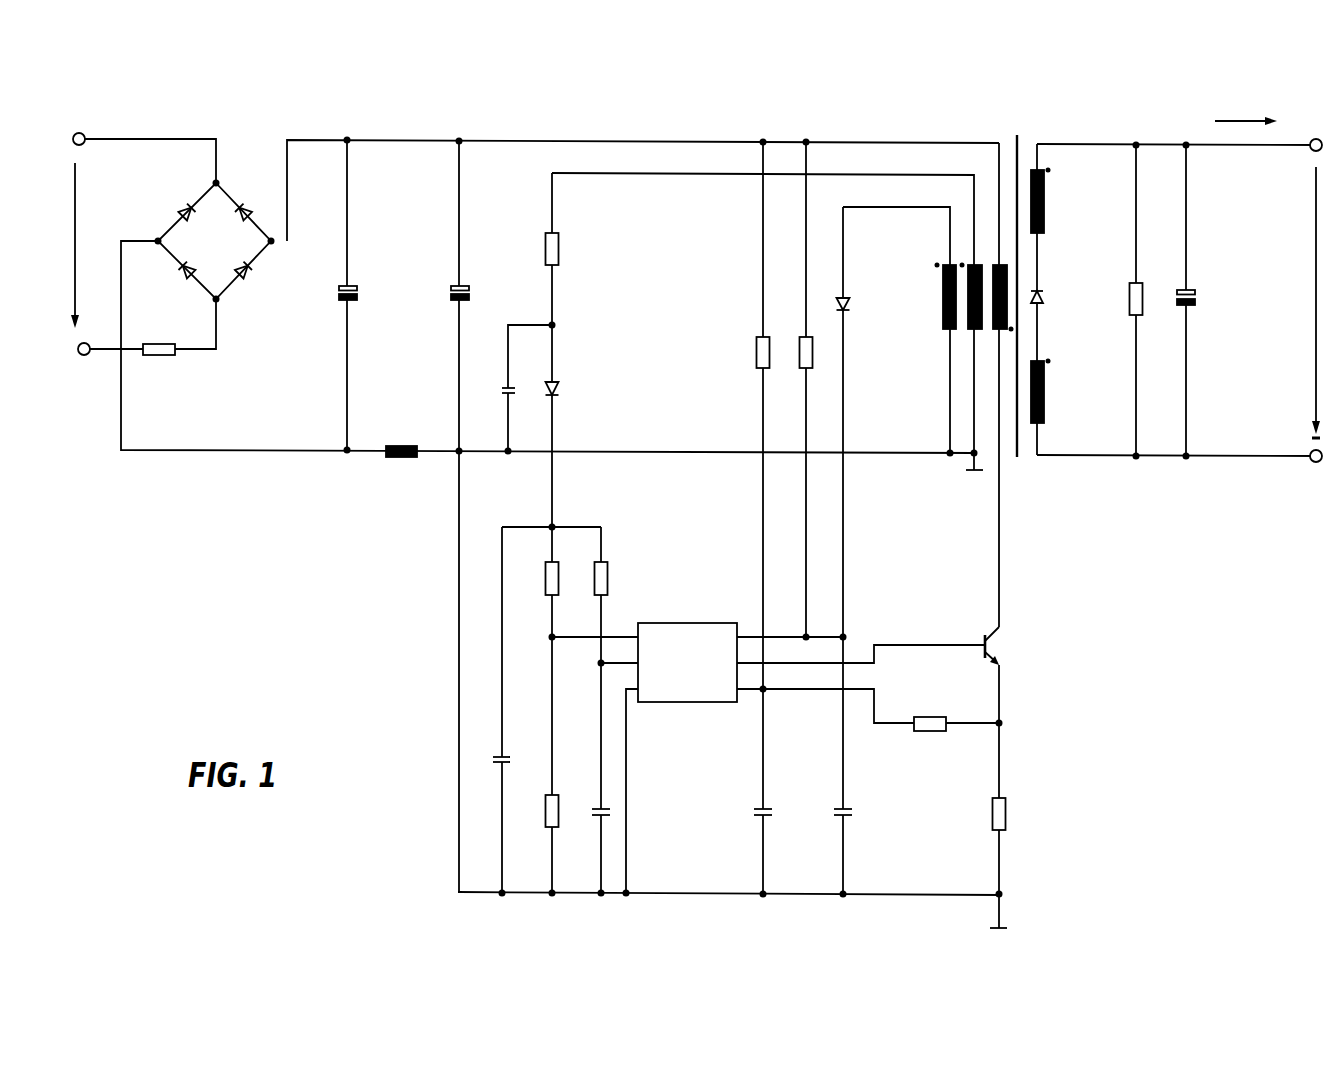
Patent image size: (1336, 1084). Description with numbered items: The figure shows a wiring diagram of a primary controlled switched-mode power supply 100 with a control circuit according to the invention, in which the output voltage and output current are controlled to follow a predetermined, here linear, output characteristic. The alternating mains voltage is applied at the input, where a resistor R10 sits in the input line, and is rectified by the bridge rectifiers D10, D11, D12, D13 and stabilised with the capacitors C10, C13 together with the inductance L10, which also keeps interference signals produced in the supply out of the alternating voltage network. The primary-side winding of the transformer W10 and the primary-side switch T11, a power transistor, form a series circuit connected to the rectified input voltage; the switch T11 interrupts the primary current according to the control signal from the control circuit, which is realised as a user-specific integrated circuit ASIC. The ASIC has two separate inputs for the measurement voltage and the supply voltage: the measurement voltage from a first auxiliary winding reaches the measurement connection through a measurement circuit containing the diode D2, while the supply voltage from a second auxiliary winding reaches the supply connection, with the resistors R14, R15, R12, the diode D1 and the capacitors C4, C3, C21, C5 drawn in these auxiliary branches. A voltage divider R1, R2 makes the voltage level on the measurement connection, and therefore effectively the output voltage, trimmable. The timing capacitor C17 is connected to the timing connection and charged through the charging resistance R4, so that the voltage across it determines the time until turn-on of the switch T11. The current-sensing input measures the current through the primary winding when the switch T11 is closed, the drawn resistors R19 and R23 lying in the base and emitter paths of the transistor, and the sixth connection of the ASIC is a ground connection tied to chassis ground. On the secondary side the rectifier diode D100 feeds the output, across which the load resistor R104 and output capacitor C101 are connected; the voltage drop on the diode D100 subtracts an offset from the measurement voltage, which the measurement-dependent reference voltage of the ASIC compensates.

The switched-mode power supply circuit 100 is at (304, 585).
The bridge rectifier diode D10 is at (261, 201).
The bridge rectifier diode D11 is at (174, 196).
The bridge rectifier diode D12 is at (201, 262).
The bridge rectifier diode D13 is at (233, 256).
The input resistor R10 is at (161, 340).
The capacitor C10 is at (338, 295).
The capacitor C13 is at (450, 516).
The inductance L10 is at (404, 442).
The resistor R14 is at (543, 248).
The diode D2 is at (542, 388).
The capacitor C4 is at (516, 390).
The resistor R15 is at (754, 517).
The resistor R12 is at (797, 390).
The diode D1 is at (884, 550).
The transformer W10 is at (953, 381).
The secondary diode D100 is at (1054, 303).
The output load resistor R104 is at (1127, 301).
The output capacitor C101 is at (1176, 301).
The capacitor C5 is at (491, 712).
The voltage divider resistor R1 is at (543, 578).
The voltage divider resistor R2 is at (543, 811).
The charging resistance R4 is at (593, 668).
The timing capacitor C17 is at (592, 843).
The capacitor C3 is at (754, 792).
The capacitor C21 is at (834, 844).
The user-specific integrated circuit ASIC is at (768, 750).
The primary-side switch T11 is at (1014, 712).
The resistor R19 is at (956, 714).
The emitter resistor R23 is at (1010, 861).